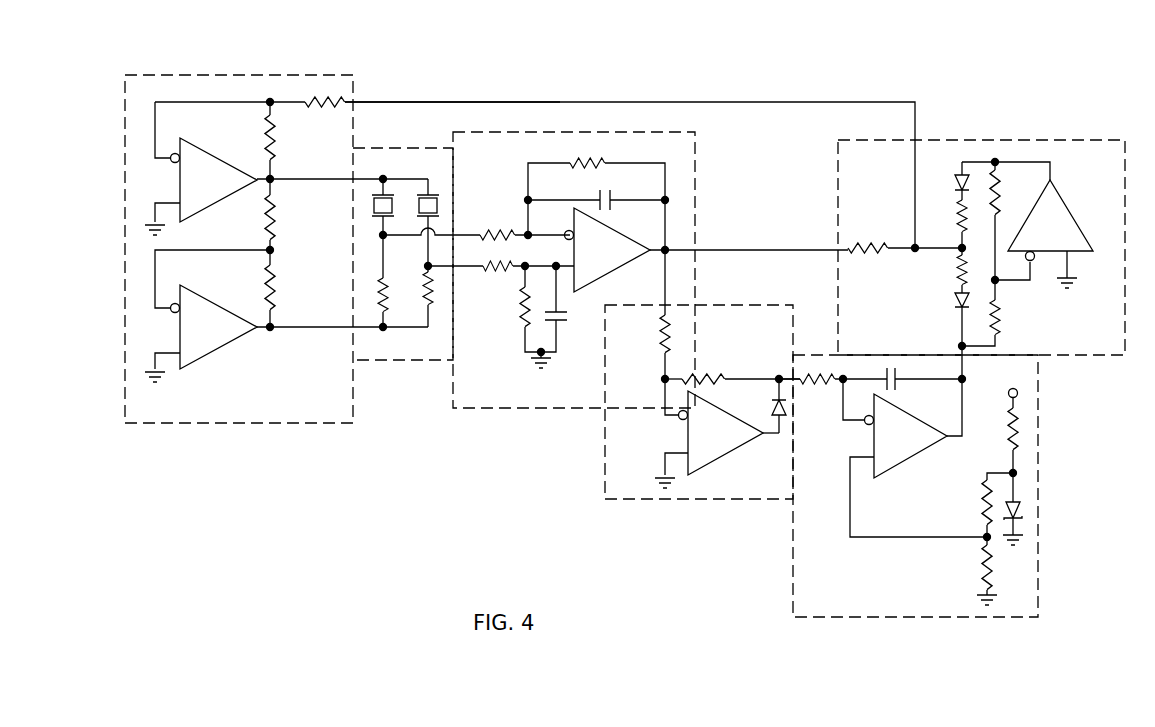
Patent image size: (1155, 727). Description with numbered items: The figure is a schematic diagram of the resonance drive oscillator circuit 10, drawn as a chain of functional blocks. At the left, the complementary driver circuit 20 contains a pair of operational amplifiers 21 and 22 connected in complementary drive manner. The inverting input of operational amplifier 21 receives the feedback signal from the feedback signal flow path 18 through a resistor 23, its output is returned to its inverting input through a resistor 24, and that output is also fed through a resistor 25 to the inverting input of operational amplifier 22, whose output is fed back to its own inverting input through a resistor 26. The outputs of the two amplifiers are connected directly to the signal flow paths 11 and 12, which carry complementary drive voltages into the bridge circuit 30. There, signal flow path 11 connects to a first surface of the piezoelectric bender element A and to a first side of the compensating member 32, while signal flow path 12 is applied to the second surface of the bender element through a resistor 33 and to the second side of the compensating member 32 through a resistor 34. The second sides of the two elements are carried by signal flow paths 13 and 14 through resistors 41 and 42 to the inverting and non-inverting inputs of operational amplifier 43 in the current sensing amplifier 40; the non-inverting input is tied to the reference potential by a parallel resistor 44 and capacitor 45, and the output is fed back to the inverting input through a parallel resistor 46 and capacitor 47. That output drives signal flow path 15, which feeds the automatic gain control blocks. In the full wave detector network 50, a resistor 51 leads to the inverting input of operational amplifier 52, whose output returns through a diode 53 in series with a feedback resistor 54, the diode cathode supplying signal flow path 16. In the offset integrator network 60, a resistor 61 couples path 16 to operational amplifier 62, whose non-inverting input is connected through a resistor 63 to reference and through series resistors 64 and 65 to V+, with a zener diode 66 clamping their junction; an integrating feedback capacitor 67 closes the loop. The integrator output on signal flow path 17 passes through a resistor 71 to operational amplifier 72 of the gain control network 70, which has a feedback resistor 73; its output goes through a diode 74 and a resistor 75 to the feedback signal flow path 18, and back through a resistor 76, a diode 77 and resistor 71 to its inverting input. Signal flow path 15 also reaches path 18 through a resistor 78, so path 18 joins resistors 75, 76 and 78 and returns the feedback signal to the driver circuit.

The resonance drive oscillator circuit 10 is at (546, 90).
The signal flow path 11 is at (290, 180).
The signal flow path 12 is at (322, 328).
The signal flow path 13 is at (463, 236).
The signal flow path 14 is at (465, 267).
The signal flow path 15 is at (729, 248).
The signal flow path 16 is at (782, 377).
The signal flow path 17 is at (958, 356).
The feedback signal flow path 18 is at (464, 100).
The complementary driver circuit 20 is at (290, 75).
The operational amplifier 21 is at (201, 168).
The operational amplifier 22 is at (207, 316).
The resistor 23 is at (343, 104).
The resistor 24 is at (267, 143).
The resistor 25 is at (273, 220).
The resistor 26 is at (274, 292).
The bridge circuit 30 is at (370, 149).
The compensating member 32 is at (436, 205).
The resistor 33 is at (386, 283).
The resistor 34 is at (427, 290).
The current sensing amplifier 40 is at (523, 408).
The resistor 41 is at (503, 230).
The resistor 42 is at (498, 268).
The operational amplifier 43 is at (617, 257).
The resistor 44 is at (524, 300).
The capacitor 45 is at (567, 320).
The resistor 46 is at (600, 163).
The capacitor 47 is at (607, 194).
The full wave detector network 50 is at (717, 500).
The resistor 51 is at (670, 343).
The operational amplifier 52 is at (717, 433).
The diode 53 is at (787, 409).
The feedback resistor 54 is at (694, 380).
The offset integrator network 60 is at (795, 534).
The resistor 61 is at (804, 372).
The operational amplifier 62 is at (915, 458).
The resistor 63 is at (984, 572).
The resistor 64 is at (984, 511).
The resistor 65 is at (1020, 432).
The zener diode 66 is at (1022, 509).
The integrating feedback capacitor 67 is at (889, 367).
The gain control network 70 is at (988, 140).
The resistor 71 is at (998, 318).
The operational amplifier 72 is at (1050, 234).
The feedback resistor 73 is at (996, 195).
The diode 74 is at (957, 176).
The resistor 75 is at (961, 213).
The resistor 76 is at (957, 266).
The diode 77 is at (956, 297).
The resistor 78 is at (857, 247).